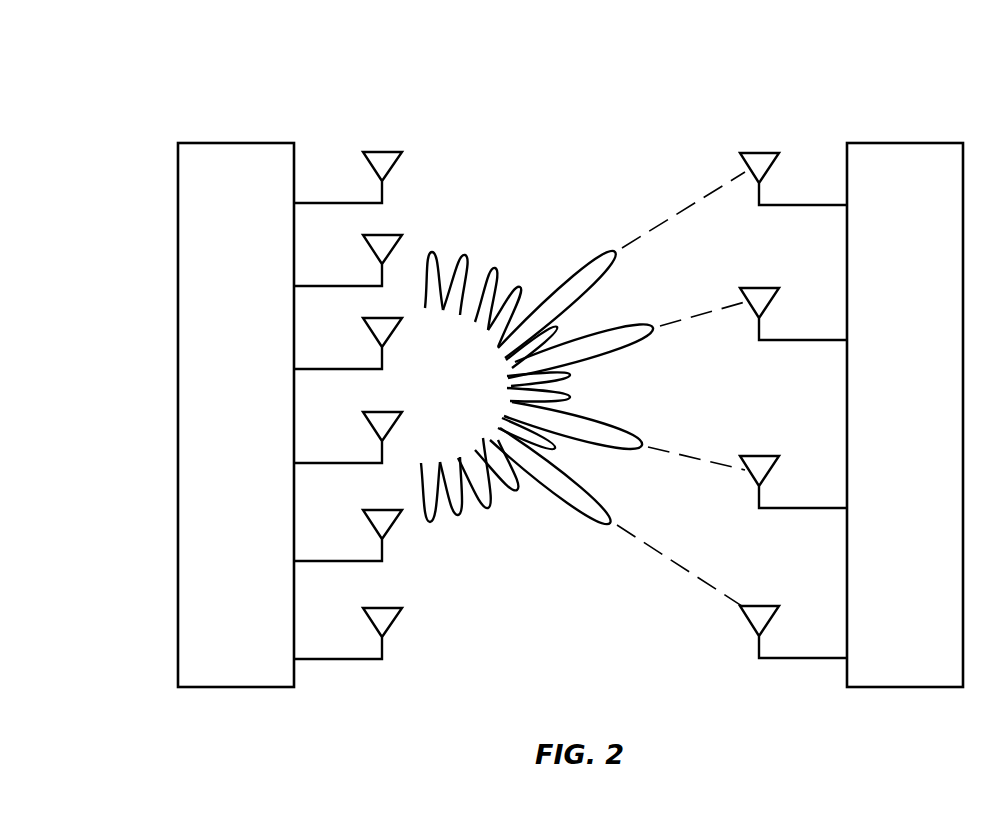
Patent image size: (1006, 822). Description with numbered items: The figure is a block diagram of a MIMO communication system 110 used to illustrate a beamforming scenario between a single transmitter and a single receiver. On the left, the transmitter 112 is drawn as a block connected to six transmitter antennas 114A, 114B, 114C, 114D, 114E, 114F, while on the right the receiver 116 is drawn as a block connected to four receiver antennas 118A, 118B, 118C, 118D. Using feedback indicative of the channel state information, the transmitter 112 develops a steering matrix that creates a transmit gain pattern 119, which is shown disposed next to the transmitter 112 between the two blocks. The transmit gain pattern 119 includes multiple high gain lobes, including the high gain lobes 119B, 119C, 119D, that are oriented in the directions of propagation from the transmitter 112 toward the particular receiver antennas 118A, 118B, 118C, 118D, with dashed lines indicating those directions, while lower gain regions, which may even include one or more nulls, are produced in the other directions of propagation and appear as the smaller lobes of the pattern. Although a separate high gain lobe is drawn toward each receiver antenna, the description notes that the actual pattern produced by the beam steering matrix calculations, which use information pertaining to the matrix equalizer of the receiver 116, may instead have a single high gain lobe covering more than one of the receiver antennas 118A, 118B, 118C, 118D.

The MIMO communication system 110 is at (638, 71).
The transmitter 112 is at (232, 143).
The transmitter antenna 114A is at (362, 153).
The transmitter antenna 114B is at (362, 236).
The transmitter antenna 114C is at (362, 319).
The transmitter antenna 114D is at (362, 413).
The transmitter antenna 114E is at (362, 511).
The transmitter antenna 114F is at (362, 609).
The receiver 116 is at (910, 143).
The receiver antenna 118A is at (779, 155).
The receiver antenna 118B is at (779, 290).
The receiver antenna 118C is at (779, 458).
The receiver antenna 118D is at (779, 608).
The transmit gain pattern 119 is at (450, 252).
The high gain lobe 119B is at (583, 258).
The high gain lobe 119C is at (612, 425).
The high gain lobe 119D is at (605, 507).